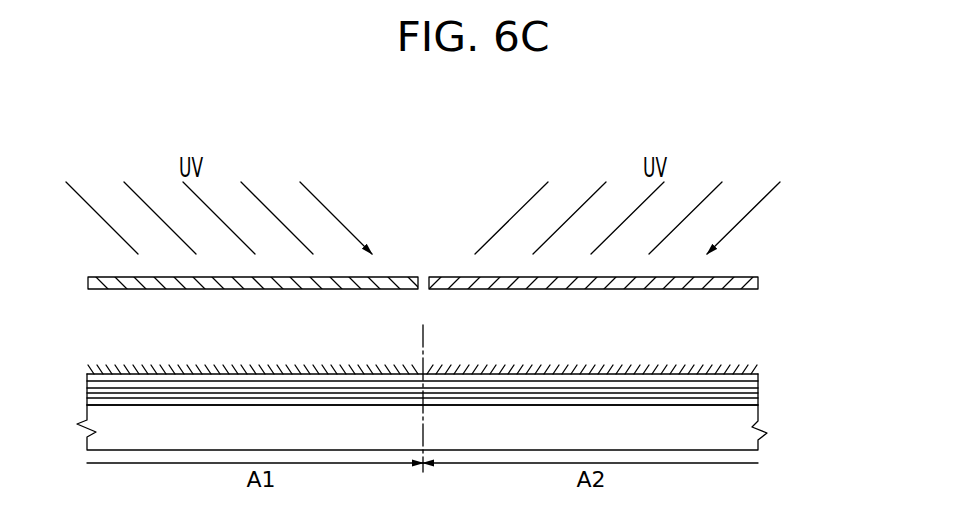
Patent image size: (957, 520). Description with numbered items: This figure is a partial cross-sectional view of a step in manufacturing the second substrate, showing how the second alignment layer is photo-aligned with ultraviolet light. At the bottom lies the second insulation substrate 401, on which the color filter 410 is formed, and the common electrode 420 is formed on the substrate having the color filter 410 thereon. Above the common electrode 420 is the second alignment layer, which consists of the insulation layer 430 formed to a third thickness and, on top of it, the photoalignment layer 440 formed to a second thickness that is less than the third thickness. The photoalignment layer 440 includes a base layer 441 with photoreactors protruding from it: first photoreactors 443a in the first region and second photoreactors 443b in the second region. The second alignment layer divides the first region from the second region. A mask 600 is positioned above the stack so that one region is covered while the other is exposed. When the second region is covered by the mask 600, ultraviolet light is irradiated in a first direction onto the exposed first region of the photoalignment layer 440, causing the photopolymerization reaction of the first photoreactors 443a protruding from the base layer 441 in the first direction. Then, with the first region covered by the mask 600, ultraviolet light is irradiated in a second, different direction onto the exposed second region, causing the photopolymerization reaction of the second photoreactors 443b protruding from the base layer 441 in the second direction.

The mask 600 is at (758, 284).
The photoalignment layer 440 is at (459, 346).
The base layer 441 is at (343, 381).
The first photoreactors 443a is at (228, 373).
The second photoreactors 443b is at (604, 373).
The insulation layer 430 is at (758, 382).
The common electrode 420 is at (758, 392).
The color filter 410 is at (758, 400).
The second insulation substrate 401 is at (758, 445).